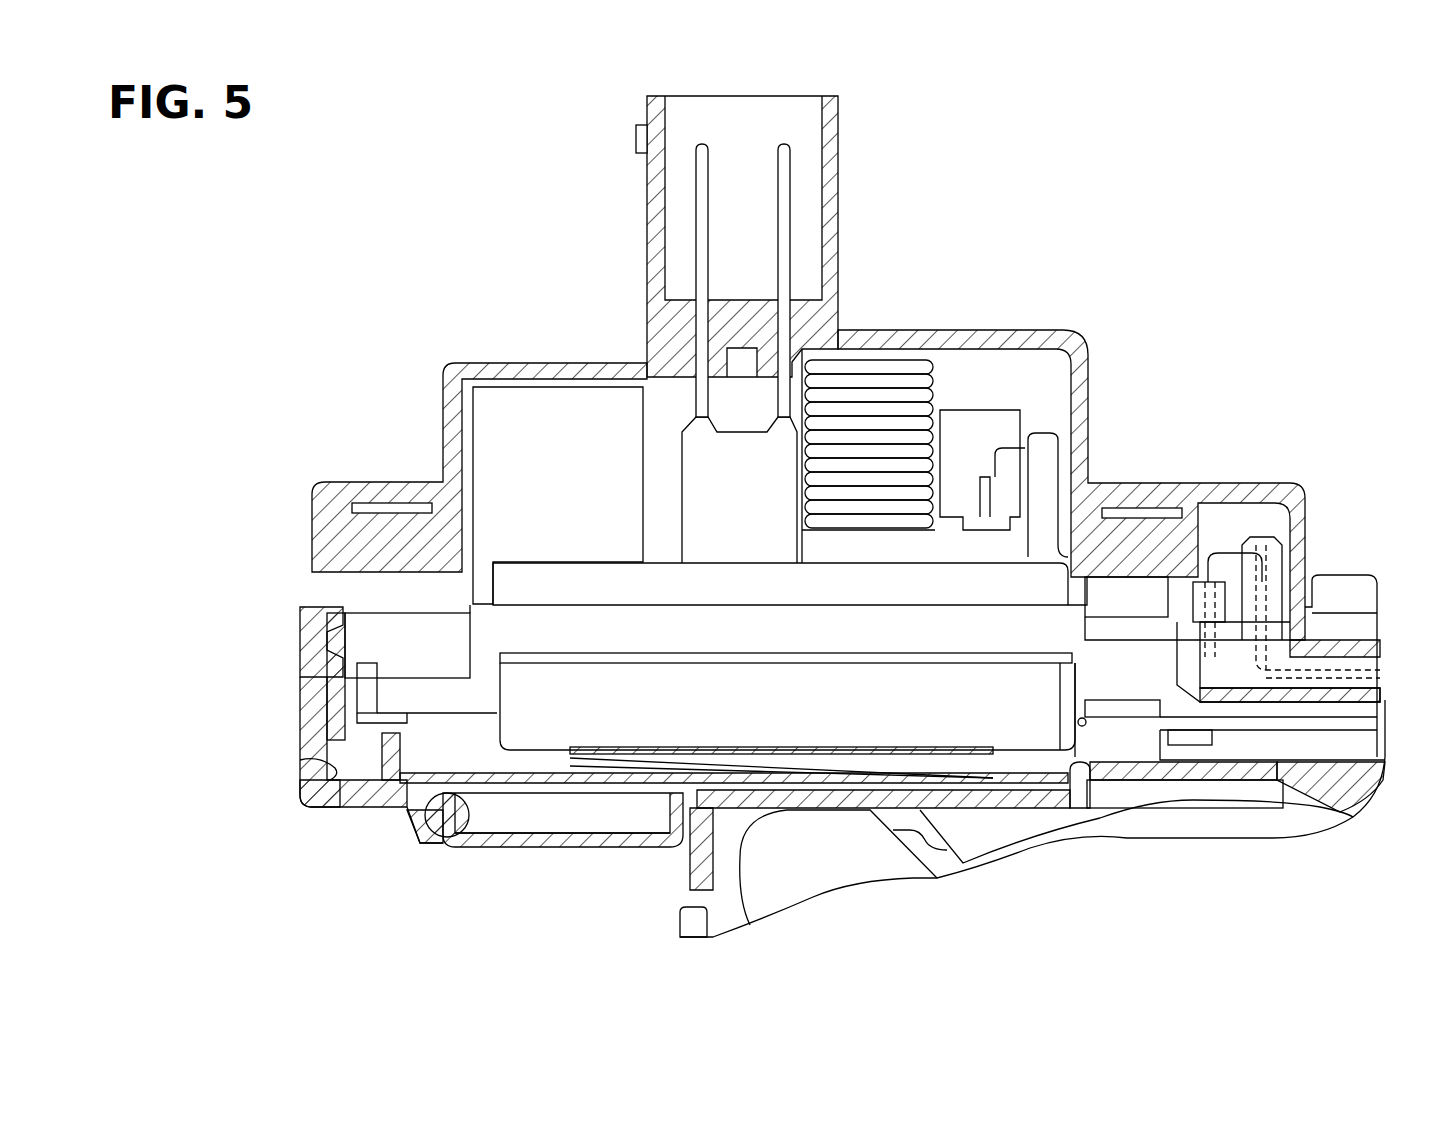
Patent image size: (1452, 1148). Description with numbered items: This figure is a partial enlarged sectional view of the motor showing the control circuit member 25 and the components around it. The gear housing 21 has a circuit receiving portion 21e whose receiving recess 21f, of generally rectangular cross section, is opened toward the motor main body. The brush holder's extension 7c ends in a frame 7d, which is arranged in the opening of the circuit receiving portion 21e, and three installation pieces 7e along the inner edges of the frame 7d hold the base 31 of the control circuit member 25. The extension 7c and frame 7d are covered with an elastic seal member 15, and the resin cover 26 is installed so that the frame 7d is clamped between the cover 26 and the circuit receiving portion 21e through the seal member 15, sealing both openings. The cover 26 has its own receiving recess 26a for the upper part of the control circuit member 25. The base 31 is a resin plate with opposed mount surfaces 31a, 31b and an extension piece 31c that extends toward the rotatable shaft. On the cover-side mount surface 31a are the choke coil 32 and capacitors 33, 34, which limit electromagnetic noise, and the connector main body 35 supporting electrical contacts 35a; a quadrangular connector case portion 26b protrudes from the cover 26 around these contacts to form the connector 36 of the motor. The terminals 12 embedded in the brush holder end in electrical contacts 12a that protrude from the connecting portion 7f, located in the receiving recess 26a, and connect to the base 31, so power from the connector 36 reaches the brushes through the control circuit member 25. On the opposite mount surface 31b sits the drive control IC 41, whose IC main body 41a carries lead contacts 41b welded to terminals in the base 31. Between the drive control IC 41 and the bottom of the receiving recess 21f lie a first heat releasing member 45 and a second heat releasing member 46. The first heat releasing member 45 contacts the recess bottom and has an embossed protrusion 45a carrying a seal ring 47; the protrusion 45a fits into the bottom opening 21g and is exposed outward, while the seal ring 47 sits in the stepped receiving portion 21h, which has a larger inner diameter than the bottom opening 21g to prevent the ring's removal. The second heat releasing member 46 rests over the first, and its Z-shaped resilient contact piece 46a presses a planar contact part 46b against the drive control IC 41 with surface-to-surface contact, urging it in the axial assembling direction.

The extension 7c is at (1345, 712).
The frame 7d is at (345, 613).
The installation pieces 7e is at (375, 690).
The connecting portion 7f is at (1262, 537).
The terminals 12 is at (1382, 676).
The electrical contacts 12a is at (1218, 553).
The seal member 15 is at (300, 664).
The gear housing 21 is at (858, 878).
The circuit receiving portion 21e is at (362, 805).
The receiving recess 21f is at (300, 772).
The bottom opening 21g is at (436, 850).
The stepped receiving portion 21h is at (428, 828).
The control circuit member 25 is at (1012, 390).
The cover 26 is at (462, 368).
The receiving recess 26a is at (462, 408).
The connector case portion 26b is at (648, 170).
The base 31 is at (1100, 600).
The mount surface 31a is at (582, 600).
The mount surface 31b is at (625, 660).
The extension piece 31c is at (1345, 745).
The choke coil 32 is at (876, 360).
The capacitor 33 is at (527, 395).
The capacitor 34 is at (975, 420).
The connector main body 35 is at (682, 435).
The electrical contacts 35a is at (783, 150).
The connector 36 is at (842, 96).
The drive control IC 41 is at (884, 663).
The IC main body 41a is at (768, 676).
The lead contacts 41b is at (450, 742).
The first heat releasing member 45 is at (640, 848).
The protrusion 45a is at (540, 848).
The second heat releasing member 46 is at (545, 752).
The resilient contact piece 46a is at (893, 765).
The contact part 46b is at (830, 757).
The seal ring 47 is at (465, 835).